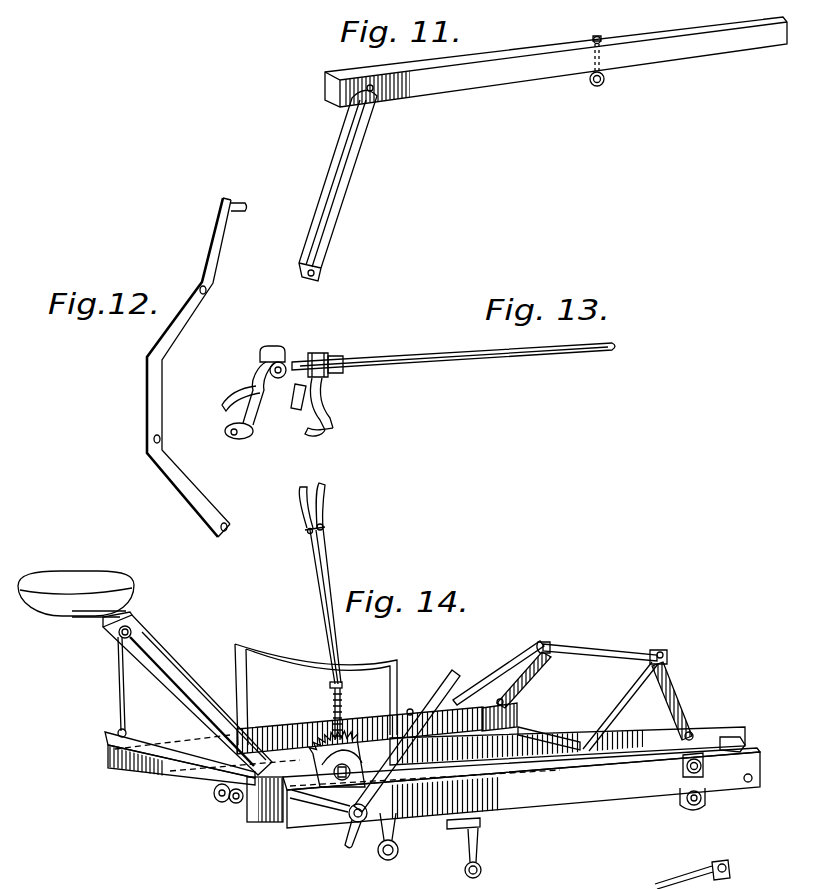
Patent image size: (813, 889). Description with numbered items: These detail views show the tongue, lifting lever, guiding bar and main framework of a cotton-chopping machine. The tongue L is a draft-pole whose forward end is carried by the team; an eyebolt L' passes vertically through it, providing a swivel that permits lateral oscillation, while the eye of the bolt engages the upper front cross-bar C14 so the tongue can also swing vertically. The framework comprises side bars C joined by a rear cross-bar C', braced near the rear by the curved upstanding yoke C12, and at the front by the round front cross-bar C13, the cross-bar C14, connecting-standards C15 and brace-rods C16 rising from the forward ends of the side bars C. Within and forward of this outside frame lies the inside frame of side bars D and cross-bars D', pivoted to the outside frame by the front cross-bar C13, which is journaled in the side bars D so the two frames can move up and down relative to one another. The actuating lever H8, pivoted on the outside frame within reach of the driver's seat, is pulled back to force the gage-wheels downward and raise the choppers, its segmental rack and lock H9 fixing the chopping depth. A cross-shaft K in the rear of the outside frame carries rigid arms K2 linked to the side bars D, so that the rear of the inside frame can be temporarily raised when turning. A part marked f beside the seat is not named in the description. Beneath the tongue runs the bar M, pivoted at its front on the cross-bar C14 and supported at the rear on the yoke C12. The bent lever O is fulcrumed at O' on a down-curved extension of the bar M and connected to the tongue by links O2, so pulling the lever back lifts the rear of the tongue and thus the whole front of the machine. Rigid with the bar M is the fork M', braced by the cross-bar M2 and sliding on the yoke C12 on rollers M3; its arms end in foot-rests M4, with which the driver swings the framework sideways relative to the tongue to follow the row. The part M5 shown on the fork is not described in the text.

In FIG. 11, the tongue L is at (556, 59).
In FIG. 11, the eyebolt L' is at (582, 52).
In FIG. 11, the links O2 is at (338, 210).
In FIG. 12, the bent lever O is at (177, 367).
In FIG. 13, the fulcrum O' is at (232, 449).
In FIG. 13, the bar M is at (453, 345).
In FIG. 13, the fork M' is at (292, 382).
In FIG. 13, the cross-bar M2 is at (306, 358).
In FIG. 13, the rollers M3 is at (330, 354).
In FIG. 13, the foot-rests M4 is at (229, 400).
In FIG. 13, the block M5 is at (275, 347).
In FIG. 14, the seat f is at (76, 605).
In FIG. 14, the side bars C is at (498, 783).
In FIG. 14, the rear cross-bar C' is at (202, 777).
In FIG. 14, the upstanding yoke C12 is at (256, 644).
In FIG. 14, the front cross-bar C13 is at (560, 745).
In FIG. 14, the cross-bar C14 is at (563, 647).
In FIG. 14, the connecting-standards C15 is at (535, 677).
In FIG. 14, the brace-rods C16 is at (523, 660).
In FIG. 14, the side bars D is at (567, 758).
In FIG. 14, the cross-bars D' is at (576, 714).
In FIG. 14, the actuating-lever H8 is at (330, 548).
In FIG. 14, the segmental rack and lock H9 is at (352, 730).
In FIG. 14, the cross-shaft K is at (446, 690).
In FIG. 14, the rigid arms K2 is at (334, 838).